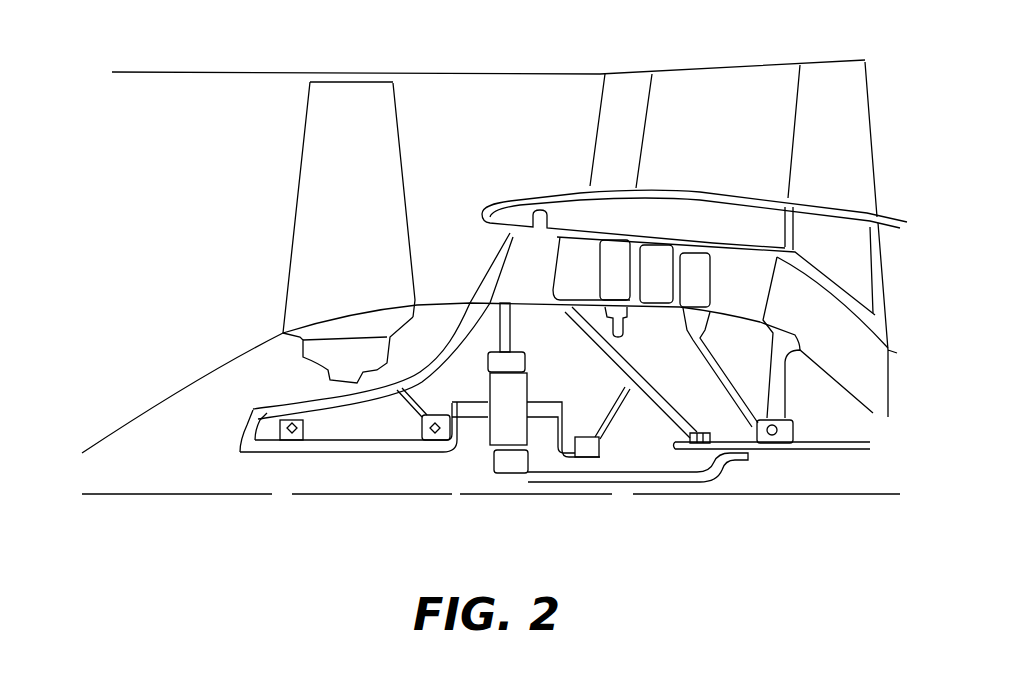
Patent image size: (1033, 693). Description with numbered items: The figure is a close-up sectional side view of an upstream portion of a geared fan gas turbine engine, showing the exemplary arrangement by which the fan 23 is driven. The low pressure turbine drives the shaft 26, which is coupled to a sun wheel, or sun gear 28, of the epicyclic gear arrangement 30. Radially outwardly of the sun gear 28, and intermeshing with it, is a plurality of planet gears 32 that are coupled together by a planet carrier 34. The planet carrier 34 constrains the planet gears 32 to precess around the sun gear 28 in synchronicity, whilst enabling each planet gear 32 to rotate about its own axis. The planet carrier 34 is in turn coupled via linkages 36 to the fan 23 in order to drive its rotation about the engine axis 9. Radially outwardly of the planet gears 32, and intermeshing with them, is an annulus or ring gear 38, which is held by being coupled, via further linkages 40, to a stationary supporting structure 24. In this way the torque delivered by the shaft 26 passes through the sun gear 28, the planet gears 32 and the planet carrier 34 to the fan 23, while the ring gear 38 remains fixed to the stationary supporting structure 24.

The engine axis 9 is at (252, 494).
The fan 23 is at (320, 246).
The stationary supporting structure 24 is at (520, 265).
The shaft 26 is at (640, 475).
The sun gear 28 is at (507, 464).
The epicyclic gear arrangement 30 is at (463, 448).
The planet gears 32 is at (483, 446).
The planet carrier 34 is at (567, 463).
The linkages 36 is at (460, 443).
The ring gear 38 is at (488, 361).
The linkages 40 is at (517, 323).